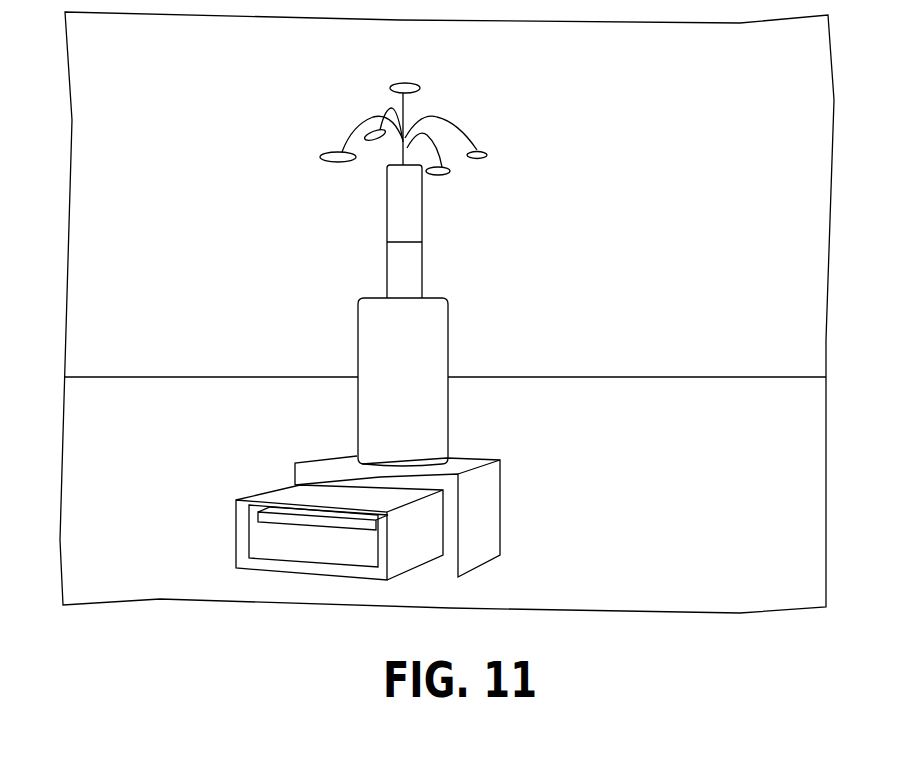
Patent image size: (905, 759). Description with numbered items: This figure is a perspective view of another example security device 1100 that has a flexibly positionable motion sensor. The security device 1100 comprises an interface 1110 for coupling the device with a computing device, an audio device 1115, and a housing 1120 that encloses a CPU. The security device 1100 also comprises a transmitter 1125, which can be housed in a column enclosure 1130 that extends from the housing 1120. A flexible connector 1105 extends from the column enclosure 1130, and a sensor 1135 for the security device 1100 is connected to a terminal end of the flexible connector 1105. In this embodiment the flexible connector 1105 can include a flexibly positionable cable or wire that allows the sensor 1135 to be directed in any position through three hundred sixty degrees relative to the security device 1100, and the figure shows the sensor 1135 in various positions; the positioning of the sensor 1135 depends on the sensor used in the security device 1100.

The security device 1100 is at (634, 162).
The flexible connector 1105 is at (355, 120).
The interface 1110 is at (235, 538).
The audio device 1115 is at (368, 314).
The housing 1120 is at (451, 376).
The transmitter 1125 is at (423, 213).
The column enclosure 1130 is at (378, 241).
The sensor 1135 is at (408, 82).